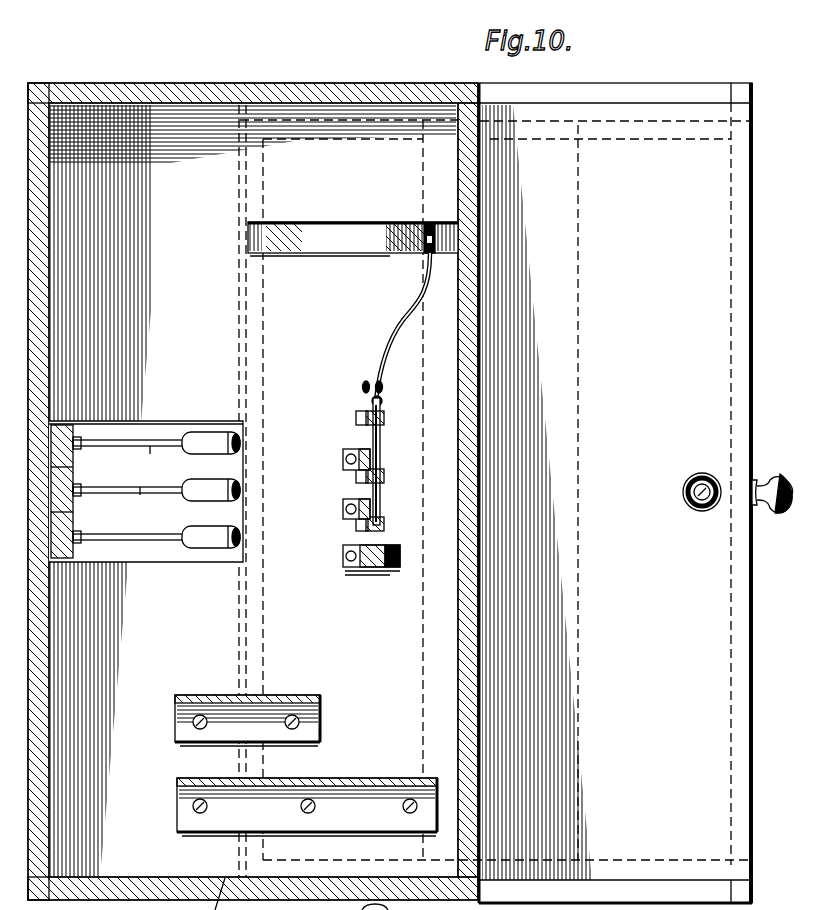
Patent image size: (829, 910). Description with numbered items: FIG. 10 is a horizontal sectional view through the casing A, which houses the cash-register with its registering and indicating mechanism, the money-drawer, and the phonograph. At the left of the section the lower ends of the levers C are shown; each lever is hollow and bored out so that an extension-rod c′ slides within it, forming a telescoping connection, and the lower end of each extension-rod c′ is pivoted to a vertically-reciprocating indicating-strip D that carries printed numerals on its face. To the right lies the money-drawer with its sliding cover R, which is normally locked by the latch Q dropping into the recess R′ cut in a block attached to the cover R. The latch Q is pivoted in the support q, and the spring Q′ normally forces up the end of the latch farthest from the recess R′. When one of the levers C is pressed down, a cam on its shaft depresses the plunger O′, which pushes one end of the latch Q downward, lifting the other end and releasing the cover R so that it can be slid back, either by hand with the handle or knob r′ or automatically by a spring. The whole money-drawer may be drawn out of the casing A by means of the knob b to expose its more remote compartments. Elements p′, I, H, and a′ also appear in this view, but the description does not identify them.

The casing A is at (390, 496).
The sliding cover R is at (615, 493).
The door panel p′ is at (616, 484).
The handle or knob r′ is at (708, 508).
The knob b is at (772, 482).
The switch bar I is at (296, 258).
The recess R′ is at (427, 227).
The latch Q is at (387, 350).
The support q is at (385, 382).
The spring Q′ is at (383, 401).
The plunger O′ is at (386, 418).
The indicating-strip D is at (78, 455).
The lever C is at (192, 454).
The extension-rod c′ is at (150, 454).
The terminal strip H is at (345, 777).
The base conductor a′ is at (355, 901).